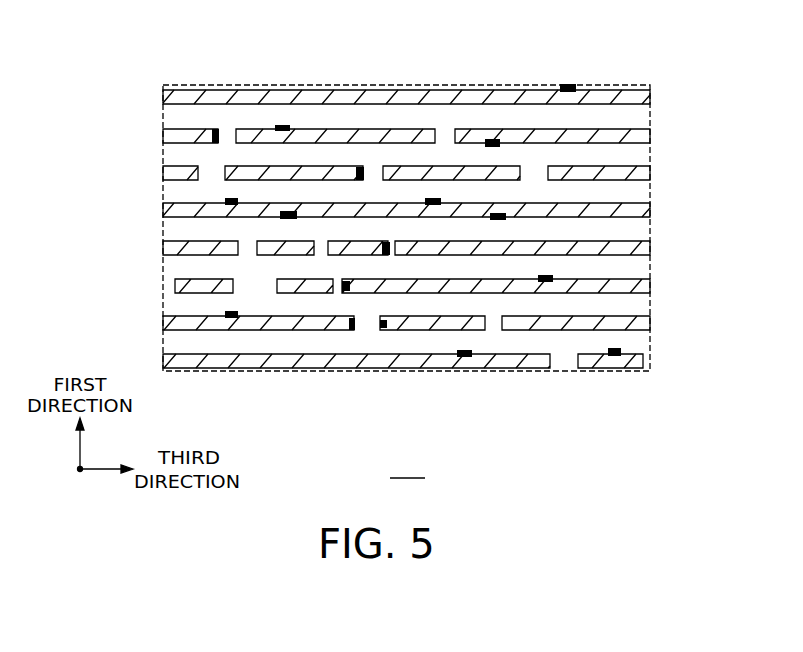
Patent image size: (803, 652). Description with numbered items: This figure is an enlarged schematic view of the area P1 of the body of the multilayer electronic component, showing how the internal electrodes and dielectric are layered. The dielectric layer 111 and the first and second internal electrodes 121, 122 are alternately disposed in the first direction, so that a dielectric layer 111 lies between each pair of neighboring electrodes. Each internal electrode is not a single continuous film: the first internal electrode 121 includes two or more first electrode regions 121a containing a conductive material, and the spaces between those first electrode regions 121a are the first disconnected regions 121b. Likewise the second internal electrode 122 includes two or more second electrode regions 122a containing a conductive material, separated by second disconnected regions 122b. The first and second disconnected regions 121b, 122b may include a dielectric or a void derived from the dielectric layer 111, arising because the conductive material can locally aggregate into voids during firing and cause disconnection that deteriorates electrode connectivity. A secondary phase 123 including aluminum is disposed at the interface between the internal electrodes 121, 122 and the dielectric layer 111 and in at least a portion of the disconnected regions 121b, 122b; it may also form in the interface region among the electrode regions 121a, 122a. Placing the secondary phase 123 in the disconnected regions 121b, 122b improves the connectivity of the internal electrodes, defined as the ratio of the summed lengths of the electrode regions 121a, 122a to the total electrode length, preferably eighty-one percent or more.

The dielectric layer 111 is at (645, 111).
The first internal electrode 121 is at (428, 149).
The first electrode region 121a is at (537, 248).
The first disconnected region 121b is at (391, 243).
The second internal electrode 122 is at (434, 349).
The second electrode region 122a is at (517, 288).
The second disconnected region 122b is at (337, 288).
The secondary phase 123 is at (383, 243).
The area P1 is at (407, 464).